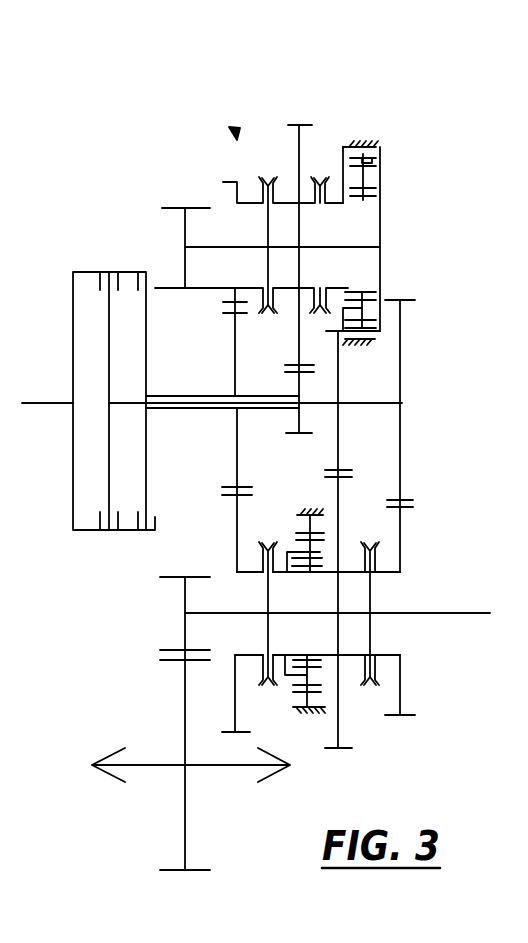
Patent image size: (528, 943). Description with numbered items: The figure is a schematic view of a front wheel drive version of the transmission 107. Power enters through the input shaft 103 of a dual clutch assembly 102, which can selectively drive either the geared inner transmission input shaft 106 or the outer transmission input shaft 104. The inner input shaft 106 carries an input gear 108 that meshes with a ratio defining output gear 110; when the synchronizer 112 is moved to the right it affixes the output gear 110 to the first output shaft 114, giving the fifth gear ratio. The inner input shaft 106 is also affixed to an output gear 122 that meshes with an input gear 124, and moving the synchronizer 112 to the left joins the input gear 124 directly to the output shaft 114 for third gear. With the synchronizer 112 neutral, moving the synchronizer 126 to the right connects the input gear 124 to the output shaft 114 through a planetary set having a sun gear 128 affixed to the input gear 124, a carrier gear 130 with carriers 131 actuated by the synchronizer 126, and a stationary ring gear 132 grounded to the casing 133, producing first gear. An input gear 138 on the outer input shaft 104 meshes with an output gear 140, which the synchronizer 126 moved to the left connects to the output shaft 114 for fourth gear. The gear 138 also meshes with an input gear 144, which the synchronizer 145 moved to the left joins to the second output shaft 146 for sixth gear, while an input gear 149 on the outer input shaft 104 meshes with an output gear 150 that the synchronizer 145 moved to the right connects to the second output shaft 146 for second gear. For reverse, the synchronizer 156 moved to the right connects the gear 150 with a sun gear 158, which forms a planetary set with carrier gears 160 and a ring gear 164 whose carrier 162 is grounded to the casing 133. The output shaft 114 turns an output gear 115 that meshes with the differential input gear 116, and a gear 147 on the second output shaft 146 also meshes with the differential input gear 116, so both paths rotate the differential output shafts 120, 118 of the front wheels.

The dual clutch assembly 102 is at (82, 272).
The input shaft 103 is at (43, 402).
The outer transmission input shaft 104 is at (158, 395).
The inner transmission input shaft 106 is at (366, 400).
The transmission 107 is at (234, 131).
The input gear 108 is at (402, 452).
The output gear 110 is at (402, 535).
The synchronizer 112 is at (376, 617).
The first output shaft 114 is at (432, 612).
The output gear 115 is at (165, 650).
The differential input gear 116 is at (165, 661).
The output shaft 118 is at (222, 767).
The output shaft 120 is at (148, 767).
The output gear 122 is at (340, 441).
The input gear 124 is at (340, 497).
The synchronizer 126 is at (257, 626).
The sun gear 128 is at (298, 568).
The carrier gear 130 is at (318, 553).
The carriers 131 is at (278, 575).
The ring gear 132 is at (300, 529).
The casing 133 is at (360, 141).
The input gear 138 is at (237, 458).
The output gear 140 is at (237, 540).
The input gear 144 is at (223, 305).
The synchronizer 145 is at (267, 176).
The second output shaft 146 is at (285, 247).
The gear 147 is at (170, 207).
The input gear 149 is at (298, 381).
The output gear 150 is at (308, 304).
The synchronizer 156 is at (318, 177).
The sun gear 158 is at (372, 200).
The carrier gears 160 is at (372, 187).
The carrier 162 is at (362, 157).
The ring gear 164 is at (372, 160).